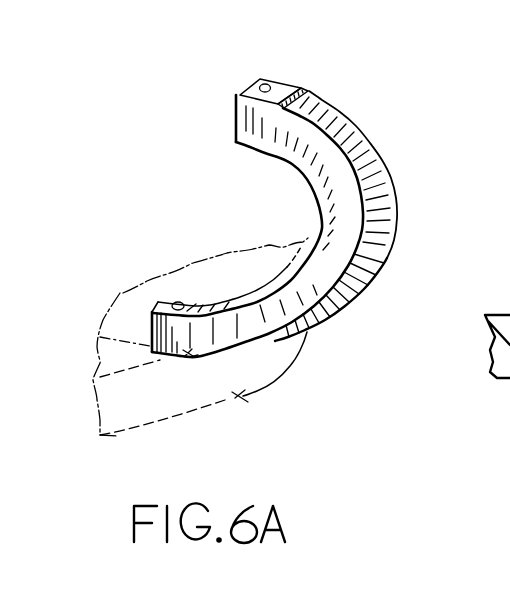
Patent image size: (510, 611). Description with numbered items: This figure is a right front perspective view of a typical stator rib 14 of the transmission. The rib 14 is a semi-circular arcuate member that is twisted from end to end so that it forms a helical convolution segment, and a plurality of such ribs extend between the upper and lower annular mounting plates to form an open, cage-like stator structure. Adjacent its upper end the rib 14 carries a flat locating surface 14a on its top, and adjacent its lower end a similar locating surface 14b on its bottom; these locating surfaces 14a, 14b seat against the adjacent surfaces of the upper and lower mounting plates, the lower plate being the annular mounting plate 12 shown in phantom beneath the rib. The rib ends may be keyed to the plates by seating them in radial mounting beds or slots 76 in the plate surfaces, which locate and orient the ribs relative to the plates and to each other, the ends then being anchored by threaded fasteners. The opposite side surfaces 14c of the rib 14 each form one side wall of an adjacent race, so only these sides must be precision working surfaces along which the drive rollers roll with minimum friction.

The stator rib 14 is at (317, 191).
The flat locating surface 14a is at (282, 82).
The locating surface 14b is at (189, 356).
The side surfaces 14c is at (326, 287).
The lower annular mounting plate 12 is at (250, 401).
The radial mounting slots 76 is at (148, 344).